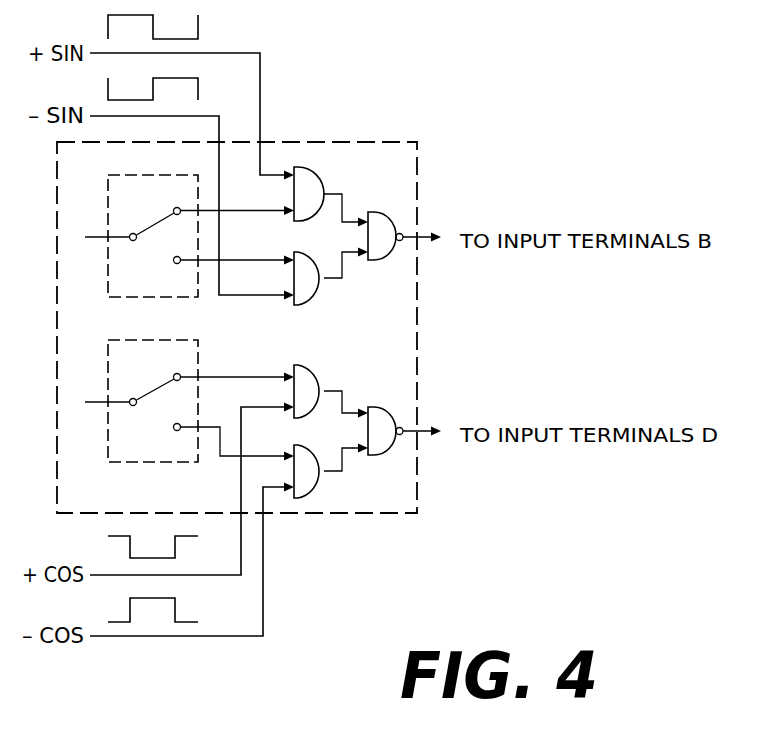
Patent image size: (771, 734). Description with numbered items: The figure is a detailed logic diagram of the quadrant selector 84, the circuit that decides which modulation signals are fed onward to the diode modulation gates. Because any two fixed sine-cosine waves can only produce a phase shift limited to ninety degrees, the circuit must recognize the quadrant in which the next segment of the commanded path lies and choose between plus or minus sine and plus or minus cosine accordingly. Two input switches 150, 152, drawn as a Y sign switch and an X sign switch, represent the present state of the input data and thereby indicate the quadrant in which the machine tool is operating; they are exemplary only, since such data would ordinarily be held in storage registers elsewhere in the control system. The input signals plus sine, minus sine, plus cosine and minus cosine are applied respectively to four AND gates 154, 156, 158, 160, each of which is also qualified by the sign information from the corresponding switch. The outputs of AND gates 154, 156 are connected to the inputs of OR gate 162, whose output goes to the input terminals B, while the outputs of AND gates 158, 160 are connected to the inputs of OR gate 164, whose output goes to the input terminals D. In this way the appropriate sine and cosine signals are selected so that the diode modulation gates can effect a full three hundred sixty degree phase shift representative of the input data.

The quadrant selector 84 is at (349, 139).
The input switch 150 is at (118, 297).
The input switch 152 is at (120, 463).
The AND gate 154 is at (317, 177).
The AND gate 156 is at (317, 300).
The AND gate 158 is at (317, 368).
The AND gate 160 is at (317, 492).
The OR gate 162 is at (384, 199).
The OR gate 164 is at (376, 407).